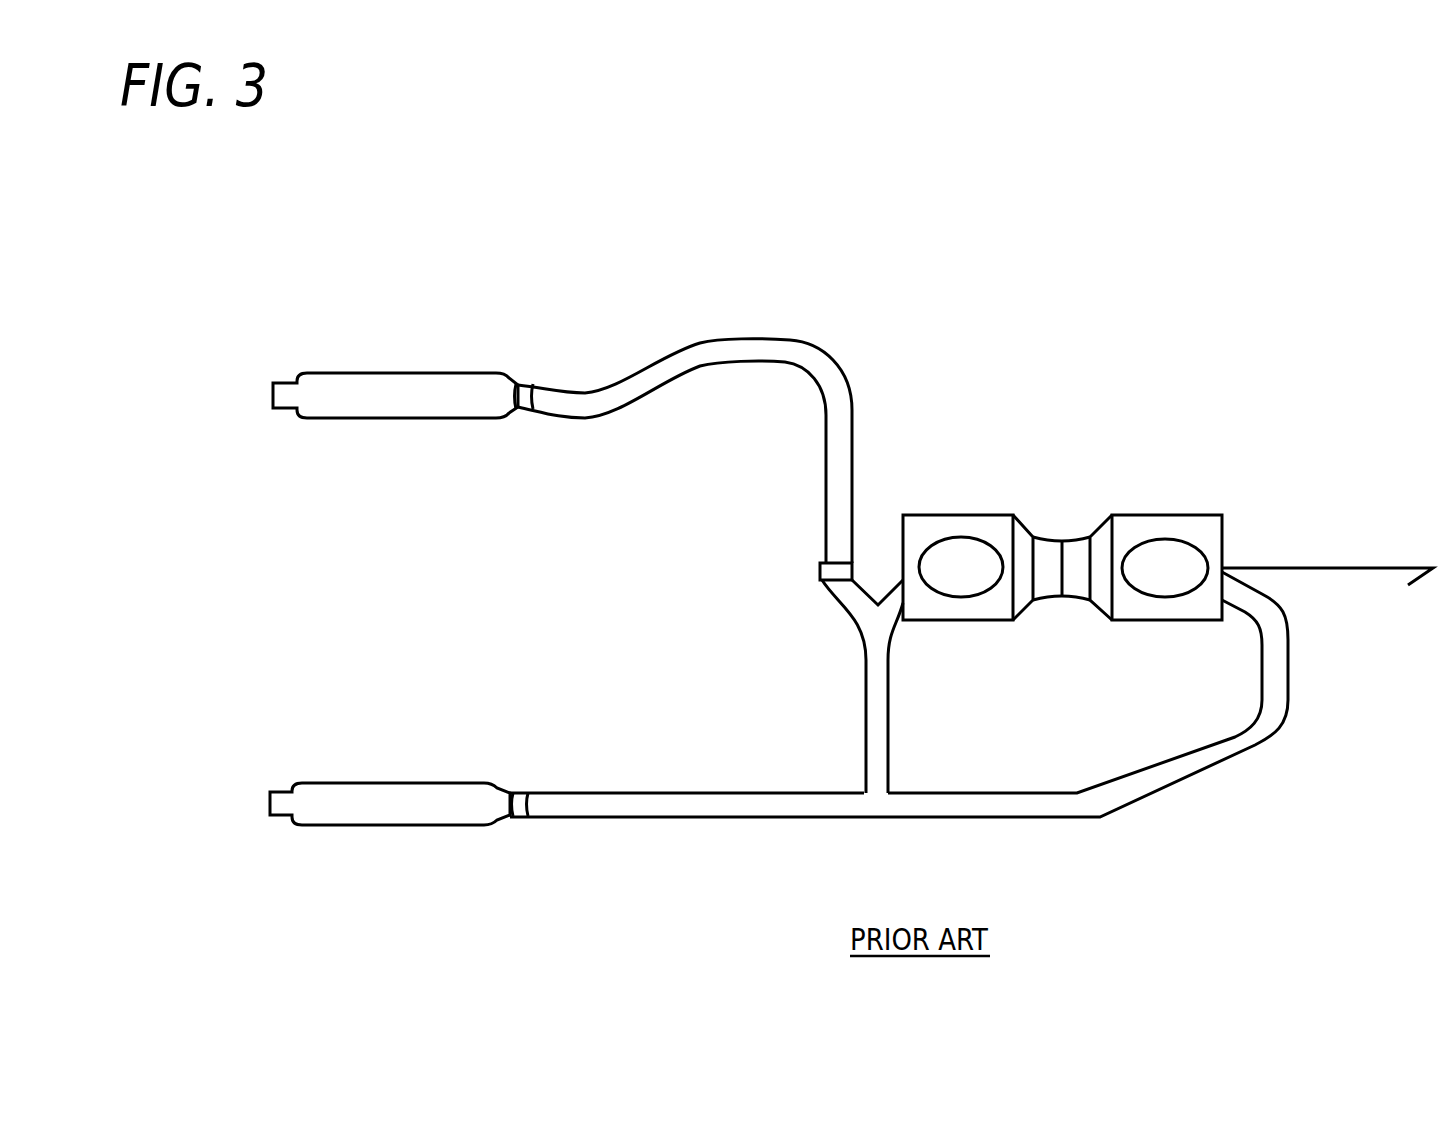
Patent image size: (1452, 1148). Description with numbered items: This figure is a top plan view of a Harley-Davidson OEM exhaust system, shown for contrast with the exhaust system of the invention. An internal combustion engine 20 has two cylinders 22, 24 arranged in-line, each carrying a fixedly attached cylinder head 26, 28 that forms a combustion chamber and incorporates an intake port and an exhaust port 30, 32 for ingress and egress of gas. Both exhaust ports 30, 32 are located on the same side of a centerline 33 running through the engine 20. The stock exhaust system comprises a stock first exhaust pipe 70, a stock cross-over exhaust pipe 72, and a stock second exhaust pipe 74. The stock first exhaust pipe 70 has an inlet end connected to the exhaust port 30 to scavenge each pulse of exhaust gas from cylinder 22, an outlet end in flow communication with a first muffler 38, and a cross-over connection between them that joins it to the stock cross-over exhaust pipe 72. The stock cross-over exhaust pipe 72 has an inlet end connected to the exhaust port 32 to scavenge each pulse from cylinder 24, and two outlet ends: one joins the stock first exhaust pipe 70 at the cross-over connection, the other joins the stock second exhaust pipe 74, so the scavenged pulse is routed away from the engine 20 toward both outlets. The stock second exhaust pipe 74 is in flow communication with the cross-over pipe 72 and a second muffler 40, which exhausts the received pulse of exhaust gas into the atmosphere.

The internal combustion engine 20 is at (1068, 537).
The cylinder 22 is at (1187, 562).
The cylinder 24 is at (962, 553).
The cylinder head 26 is at (1100, 593).
The cylinder head 28 is at (1023, 597).
The exhaust port 30 is at (1213, 592).
The exhaust port 32 is at (915, 583).
The centerline 33 is at (1370, 568).
The first muffler 38 is at (413, 815).
The second muffler 40 is at (438, 378).
The stock first exhaust pipe 70 is at (1058, 820).
The stock cross-over exhaust pipe 72 is at (863, 670).
The stock second exhaust pipe 74 is at (853, 405).